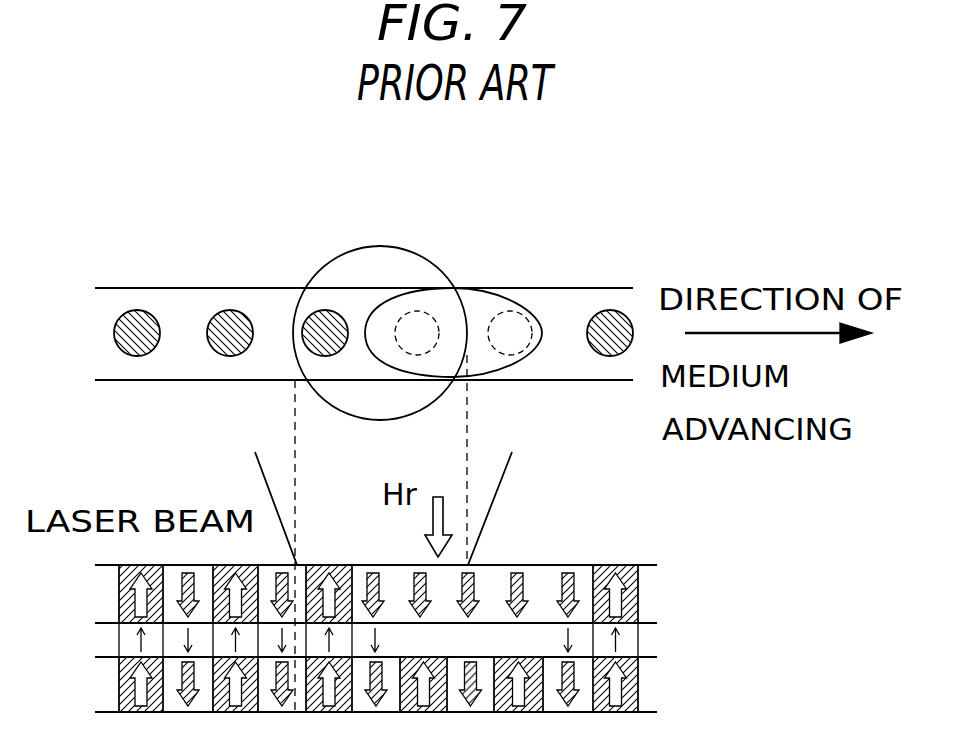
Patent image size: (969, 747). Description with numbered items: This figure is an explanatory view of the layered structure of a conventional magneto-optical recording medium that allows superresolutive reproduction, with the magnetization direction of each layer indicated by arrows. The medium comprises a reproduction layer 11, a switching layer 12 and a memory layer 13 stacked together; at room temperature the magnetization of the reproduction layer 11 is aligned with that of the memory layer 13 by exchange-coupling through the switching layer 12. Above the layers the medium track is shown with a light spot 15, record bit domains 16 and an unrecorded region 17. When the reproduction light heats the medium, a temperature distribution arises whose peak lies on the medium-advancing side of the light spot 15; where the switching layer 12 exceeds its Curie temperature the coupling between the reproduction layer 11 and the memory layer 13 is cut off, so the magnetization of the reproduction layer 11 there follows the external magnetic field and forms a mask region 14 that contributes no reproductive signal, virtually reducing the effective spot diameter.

The reproduction layer 11 is at (648, 590).
The switching layer 12 is at (648, 638).
The memory layer 13 is at (648, 688).
The mask region 14 is at (495, 375).
The light spot 15 is at (323, 268).
The record bit domain 16 is at (135, 357).
The unrecorded region 17 is at (405, 270).